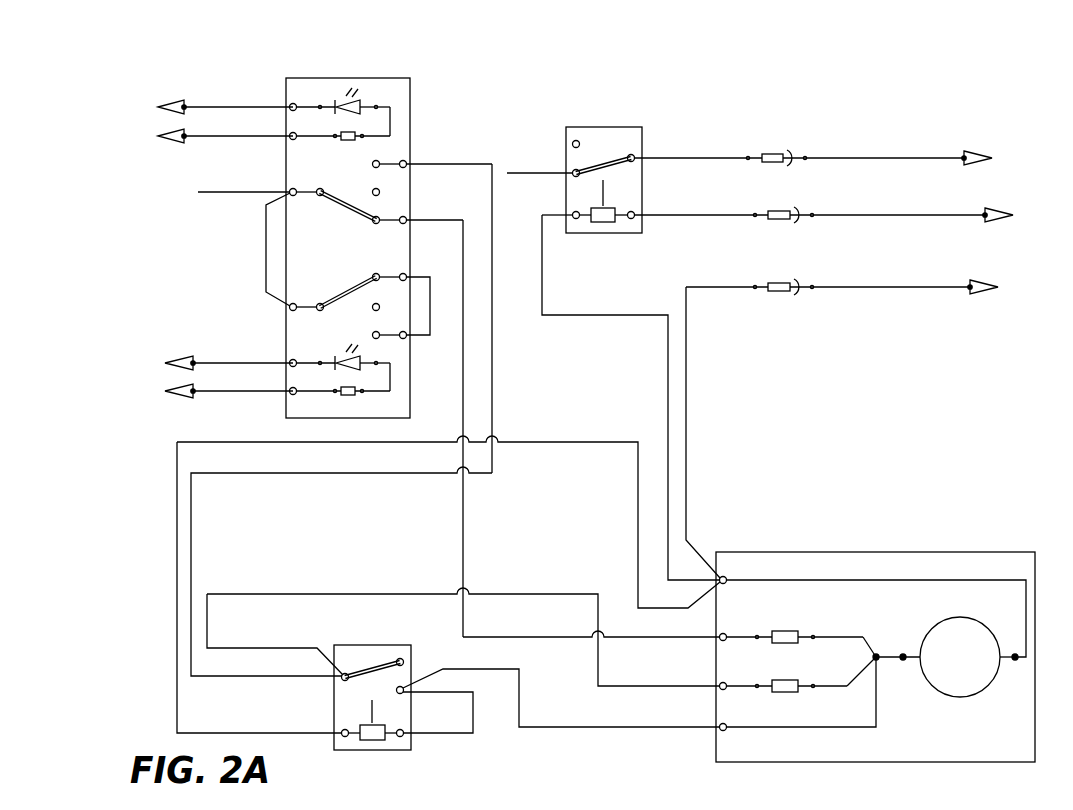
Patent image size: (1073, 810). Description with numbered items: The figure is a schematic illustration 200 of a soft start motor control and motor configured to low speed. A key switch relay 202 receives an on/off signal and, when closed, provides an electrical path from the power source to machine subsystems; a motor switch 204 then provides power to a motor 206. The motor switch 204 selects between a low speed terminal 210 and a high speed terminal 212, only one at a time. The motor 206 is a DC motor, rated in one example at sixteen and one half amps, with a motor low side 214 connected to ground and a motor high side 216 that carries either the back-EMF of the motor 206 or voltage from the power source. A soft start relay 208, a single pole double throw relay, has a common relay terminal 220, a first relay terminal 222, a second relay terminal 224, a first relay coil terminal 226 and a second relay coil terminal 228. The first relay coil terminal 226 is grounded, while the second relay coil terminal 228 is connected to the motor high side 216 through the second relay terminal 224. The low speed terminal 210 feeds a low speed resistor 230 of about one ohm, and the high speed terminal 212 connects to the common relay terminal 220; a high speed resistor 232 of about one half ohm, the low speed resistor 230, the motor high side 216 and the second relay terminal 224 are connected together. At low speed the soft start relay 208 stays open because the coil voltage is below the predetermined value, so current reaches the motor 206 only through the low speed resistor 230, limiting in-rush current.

The schematic illustration 200 is at (76, 65).
The key switch relay 202 is at (778, 337).
The motor switch 204 is at (274, 345).
The motor 206 is at (952, 657).
The soft start relay 208 is at (358, 681).
The low speed terminal 210 is at (433, 414).
The high speed terminal 212 is at (436, 303).
The motor low side 214 is at (1015, 670).
The motor high side 216 is at (903, 670).
The common relay terminal 220 is at (342, 674).
The first relay terminal 222 is at (404, 660).
The second relay terminal 224 is at (406, 689).
The first relay coil terminal 226 is at (342, 730).
The second relay coil terminal 228 is at (404, 730).
The low speed resistor 230 is at (792, 631).
The high speed resistor 232 is at (790, 680).